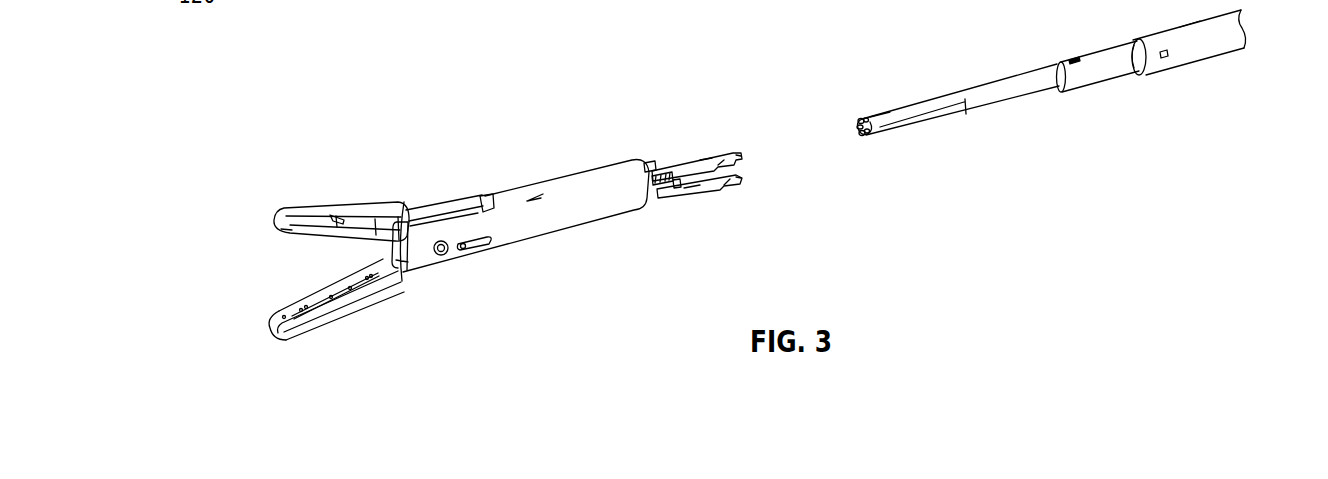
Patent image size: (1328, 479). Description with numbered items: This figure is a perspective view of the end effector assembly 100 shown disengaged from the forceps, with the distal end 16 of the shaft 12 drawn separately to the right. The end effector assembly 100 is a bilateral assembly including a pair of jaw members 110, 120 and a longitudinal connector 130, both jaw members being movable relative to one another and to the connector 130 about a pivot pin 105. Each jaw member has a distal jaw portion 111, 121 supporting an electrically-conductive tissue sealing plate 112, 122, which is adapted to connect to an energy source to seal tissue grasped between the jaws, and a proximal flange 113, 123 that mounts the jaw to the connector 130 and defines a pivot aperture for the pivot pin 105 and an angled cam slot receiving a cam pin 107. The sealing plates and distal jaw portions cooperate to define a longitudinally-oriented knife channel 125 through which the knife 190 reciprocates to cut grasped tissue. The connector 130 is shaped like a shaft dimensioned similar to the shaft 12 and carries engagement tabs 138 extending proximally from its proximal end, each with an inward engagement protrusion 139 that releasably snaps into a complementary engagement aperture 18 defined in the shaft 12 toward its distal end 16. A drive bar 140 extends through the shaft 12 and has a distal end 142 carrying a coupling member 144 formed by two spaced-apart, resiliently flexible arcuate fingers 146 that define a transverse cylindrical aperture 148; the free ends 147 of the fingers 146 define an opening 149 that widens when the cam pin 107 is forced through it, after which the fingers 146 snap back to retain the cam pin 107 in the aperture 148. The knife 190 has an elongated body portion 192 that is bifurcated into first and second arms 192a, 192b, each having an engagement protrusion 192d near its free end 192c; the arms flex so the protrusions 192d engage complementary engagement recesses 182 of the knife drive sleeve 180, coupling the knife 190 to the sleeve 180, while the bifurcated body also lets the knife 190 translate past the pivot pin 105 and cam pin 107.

The shaft 12 is at (1217, 47).
The distal end of shaft 16 is at (1187, 22).
The engagement apertures 18 is at (1168, 55).
The end effector assembly 100 is at (327, 177).
The pivot pin 105 is at (450, 250).
The cam pin 107 is at (475, 245).
The jaw member 110 is at (283, 200).
The distal jaw portion 111 is at (337, 217).
The tissue sealing plate 112 is at (285, 233).
The proximal flange 113 is at (415, 213).
The jaw member 120 is at (287, 347).
The distal jaw portion 121 is at (352, 313).
The tissue sealing plate 122 is at (277, 317).
The proximal flange 123 is at (412, 277).
The knife channel 125 is at (307, 297).
The longitudinal connector 130 is at (543, 170).
The engagement tabs 138 is at (647, 165).
The engagement protrusion 139 is at (652, 165).
The drive bar 140 is at (948, 97).
The distal end of drive bar 142 is at (947, 108).
The coupling member 144 is at (880, 118).
The arcuate fingers 146 is at (858, 120).
The free ends of fingers 147 is at (862, 118).
The cylindrical aperture 148 is at (877, 132).
The opening 149 is at (858, 130).
The knife drive sleeve 180 is at (1102, 73).
The engagement recesses 182 is at (1058, 53).
The knife 190 is at (693, 160).
The elongated body portion 192 is at (700, 187).
The first arm 192a is at (697, 163).
The second arm 192b is at (688, 190).
The free end of arm 192c is at (740, 157).
The engagement protrusion 192d is at (723, 160).